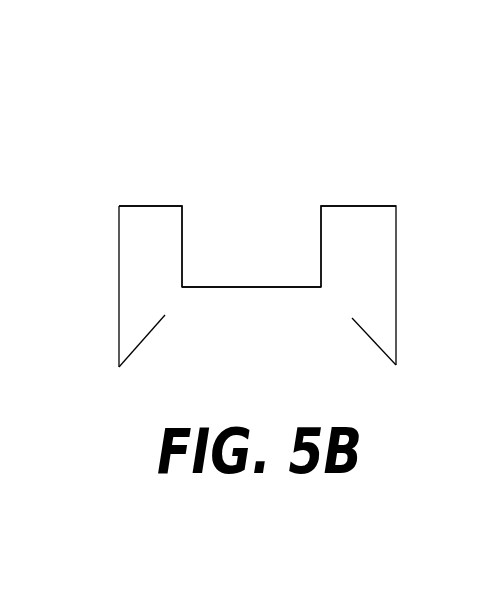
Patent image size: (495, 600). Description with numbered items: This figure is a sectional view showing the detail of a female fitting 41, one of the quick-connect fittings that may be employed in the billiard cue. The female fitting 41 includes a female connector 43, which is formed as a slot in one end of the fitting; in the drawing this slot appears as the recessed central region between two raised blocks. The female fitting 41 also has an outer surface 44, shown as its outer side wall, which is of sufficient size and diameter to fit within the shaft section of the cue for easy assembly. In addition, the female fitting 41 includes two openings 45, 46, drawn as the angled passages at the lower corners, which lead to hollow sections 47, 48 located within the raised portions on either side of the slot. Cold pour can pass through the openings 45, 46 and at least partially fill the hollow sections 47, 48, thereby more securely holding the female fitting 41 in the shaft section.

The female fitting 41 is at (377, 165).
The female connector 43 is at (261, 285).
The outer surface 44 is at (119, 271).
The opening 45 is at (178, 312).
The opening 46 is at (340, 313).
The hollow section 47 is at (163, 260).
The hollow section 48 is at (375, 273).